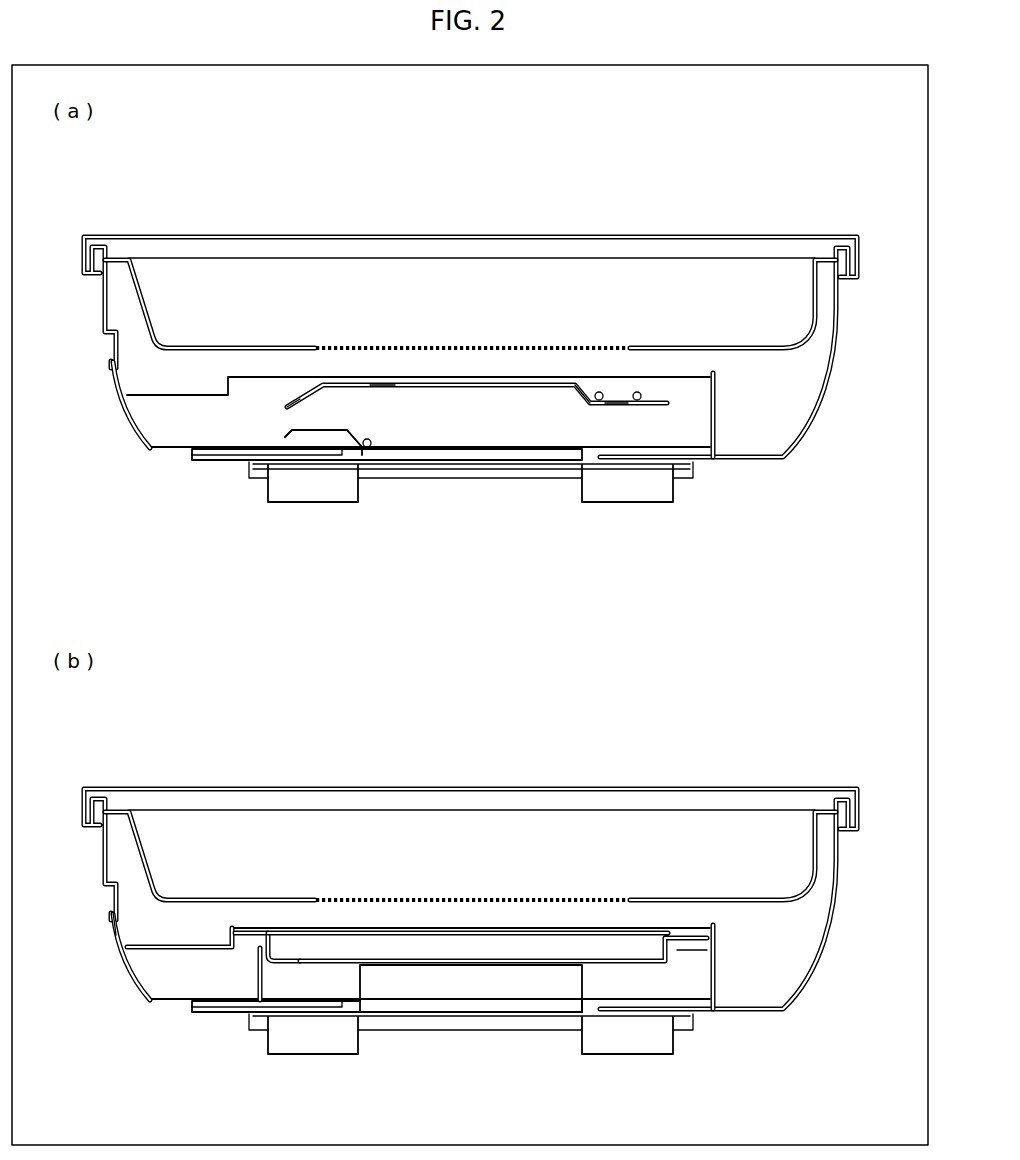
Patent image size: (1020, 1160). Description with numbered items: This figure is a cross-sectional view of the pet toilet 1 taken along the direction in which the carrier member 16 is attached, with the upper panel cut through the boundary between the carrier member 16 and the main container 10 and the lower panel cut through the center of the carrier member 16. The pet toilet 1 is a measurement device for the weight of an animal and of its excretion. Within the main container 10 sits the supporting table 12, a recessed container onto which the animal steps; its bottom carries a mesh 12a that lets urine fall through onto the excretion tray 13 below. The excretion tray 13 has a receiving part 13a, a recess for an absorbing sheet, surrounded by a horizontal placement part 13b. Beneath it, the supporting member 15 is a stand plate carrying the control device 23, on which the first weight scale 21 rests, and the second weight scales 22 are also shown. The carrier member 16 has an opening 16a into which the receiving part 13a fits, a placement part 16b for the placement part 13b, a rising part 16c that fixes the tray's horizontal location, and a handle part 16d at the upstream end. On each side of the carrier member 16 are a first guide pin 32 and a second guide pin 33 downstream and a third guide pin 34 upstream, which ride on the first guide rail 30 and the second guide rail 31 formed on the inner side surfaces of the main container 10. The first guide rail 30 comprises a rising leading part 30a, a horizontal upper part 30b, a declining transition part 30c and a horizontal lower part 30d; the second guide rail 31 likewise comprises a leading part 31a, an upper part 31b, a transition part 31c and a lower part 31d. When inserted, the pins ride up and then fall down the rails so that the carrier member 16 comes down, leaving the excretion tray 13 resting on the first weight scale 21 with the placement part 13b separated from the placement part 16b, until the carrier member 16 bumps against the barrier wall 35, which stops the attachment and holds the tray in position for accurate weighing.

The pet toilet 1 is at (818, 167).
The main container 10 is at (837, 340).
The supporting table 12 is at (816, 293).
The mesh 12a is at (439, 346).
The excretion tray 13 is at (488, 945).
The receiving part 13a is at (405, 960).
The placement part 13b is at (692, 936).
The supporting member 15 is at (483, 471).
The carrier member 16 is at (124, 412).
The opening 16a is at (266, 972).
The placement part 16b is at (250, 944).
The rising part 16c is at (233, 926).
The handle part 16d is at (113, 930).
The first weight scale 21 is at (445, 455).
The second weight scales 22 is at (627, 488).
The control device 23 is at (537, 463).
The first guide rail 30 is at (499, 377).
The leading part 30a is at (298, 400).
The upper part 30b is at (383, 383).
The transition part 30c is at (580, 382).
The lower part 30d is at (615, 399).
The second guide rail 31 is at (310, 434).
The leading part 31a is at (286, 438).
The upper part 31b is at (332, 432).
The transition part 31c is at (351, 438).
The lower part 31d is at (367, 448).
The first guide pin 32 is at (637, 391).
The second guide pin 33 is at (599, 391).
The third guide pin 34 is at (386, 458).
The barrier wall 35 is at (718, 413).